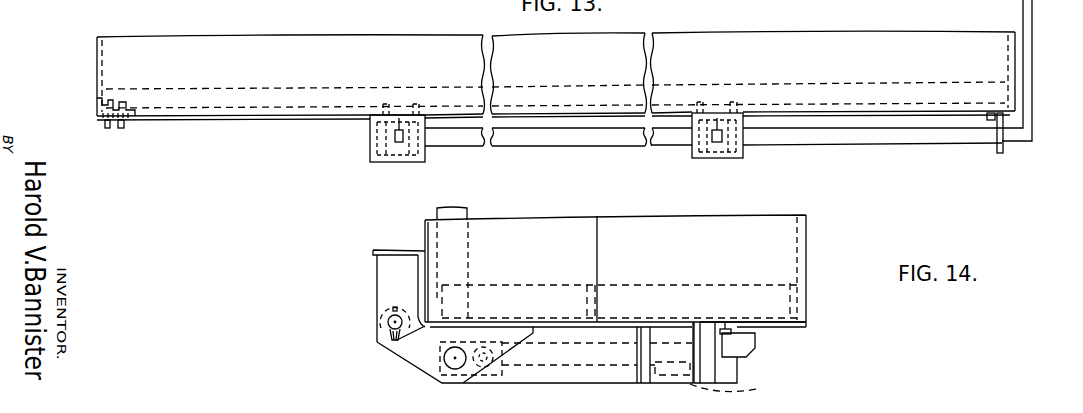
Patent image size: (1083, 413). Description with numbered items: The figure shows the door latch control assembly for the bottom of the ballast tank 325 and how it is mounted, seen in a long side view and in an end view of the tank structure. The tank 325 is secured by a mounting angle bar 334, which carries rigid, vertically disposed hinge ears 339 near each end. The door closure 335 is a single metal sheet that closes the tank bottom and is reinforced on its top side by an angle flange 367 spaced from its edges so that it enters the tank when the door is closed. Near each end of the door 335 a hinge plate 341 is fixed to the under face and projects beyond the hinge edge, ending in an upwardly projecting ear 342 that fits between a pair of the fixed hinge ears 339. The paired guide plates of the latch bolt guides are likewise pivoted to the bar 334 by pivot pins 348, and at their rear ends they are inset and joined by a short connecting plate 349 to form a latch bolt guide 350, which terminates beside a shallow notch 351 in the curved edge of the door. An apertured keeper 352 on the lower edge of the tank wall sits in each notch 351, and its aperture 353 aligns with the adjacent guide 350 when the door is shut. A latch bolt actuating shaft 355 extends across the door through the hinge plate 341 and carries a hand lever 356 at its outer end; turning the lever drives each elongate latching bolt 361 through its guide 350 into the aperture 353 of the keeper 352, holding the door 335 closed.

In FIG. 13, the ballast tank 325 is at (130, 36).
In FIG. 14, the ballast tank 325 is at (556, 198).
In FIG. 14, the mounting angle bar 334 is at (383, 249).
In FIG. 13, the door closure 335 is at (290, 122).
In FIG. 13, the hinge ears 339 is at (130, 124).
In FIG. 14, the hinge ears 339 is at (383, 279).
In FIG. 13, the hinge plate 341 is at (121, 130).
In FIG. 14, the hinge plate 341 is at (415, 362).
In FIG. 14, the upwardly projecting ear 342 is at (377, 336).
In FIG. 14, the pivot pins 348 is at (385, 332).
In FIG. 14, the connecting plate 349 is at (747, 390).
In FIG. 14, the latch bolt guide 350 is at (740, 365).
In FIG. 13, the notch 351 is at (370, 118).
In FIG. 14, the notch 351 is at (695, 323).
In FIG. 13, the keeper 352 is at (372, 153).
In FIG. 14, the keeper 352 is at (705, 330).
In FIG. 13, the aperture 353 is at (400, 129).
In FIG. 14, the aperture 353 is at (726, 328).
In FIG. 13, the latch bolt actuating shaft 355 is at (935, 146).
In FIG. 14, the latch bolt actuating shaft 355 is at (461, 352).
In FIG. 13, the hand lever 356 is at (1033, 80).
In FIG. 14, the hand lever 356 is at (458, 213).
In FIG. 13, the latching bolt 361 is at (400, 143).
In FIG. 14, the latching bolt 361 is at (756, 345).
In FIG. 13, the angle flange 367 is at (205, 98).
In FIG. 14, the angle flange 367 is at (799, 277).